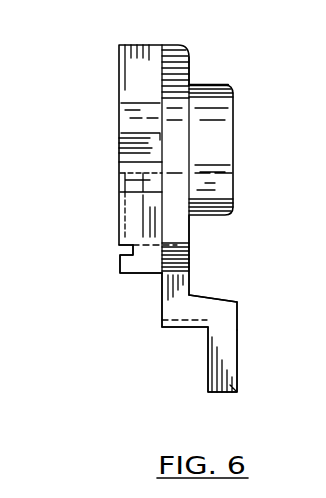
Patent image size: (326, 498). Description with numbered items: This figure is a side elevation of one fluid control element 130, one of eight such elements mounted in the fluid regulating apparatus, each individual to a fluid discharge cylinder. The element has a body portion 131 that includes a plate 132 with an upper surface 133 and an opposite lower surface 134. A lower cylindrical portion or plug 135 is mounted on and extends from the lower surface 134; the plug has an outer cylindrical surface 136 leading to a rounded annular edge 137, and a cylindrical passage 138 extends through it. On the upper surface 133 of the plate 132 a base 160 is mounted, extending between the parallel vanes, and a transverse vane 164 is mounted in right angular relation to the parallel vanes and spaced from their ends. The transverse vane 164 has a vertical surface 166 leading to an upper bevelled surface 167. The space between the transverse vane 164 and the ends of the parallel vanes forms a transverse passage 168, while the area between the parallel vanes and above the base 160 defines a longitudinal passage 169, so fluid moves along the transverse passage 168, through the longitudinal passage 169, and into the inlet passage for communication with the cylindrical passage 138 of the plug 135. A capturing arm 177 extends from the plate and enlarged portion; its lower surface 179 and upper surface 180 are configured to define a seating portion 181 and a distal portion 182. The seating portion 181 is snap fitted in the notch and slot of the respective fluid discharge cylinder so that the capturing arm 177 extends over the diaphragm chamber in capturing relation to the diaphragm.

The fluid control element 130 is at (139, 288).
The body portion 131 is at (190, 65).
The plate 132 is at (169, 229).
The upper surface 133 is at (123, 68).
The lower surface 134 is at (191, 148).
The plug 135 is at (234, 88).
The outer cylindrical surface 136 is at (213, 85).
The rounded annular edge 137 is at (231, 202).
The cylindrical passage 138 is at (206, 166).
The base 160 is at (140, 208).
The transverse vane 164 is at (152, 265).
The vertical surface 166 is at (130, 248).
The upper bevelled surface 167 is at (120, 262).
The transverse passage 168 is at (174, 250).
The longitudinal passage 169 is at (140, 178).
The capturing arm 177 is at (229, 352).
The lower surface 179 is at (238, 318).
The upper surface 180 is at (185, 328).
The seating portion 181 is at (238, 302).
The distal portion 182 is at (230, 385).